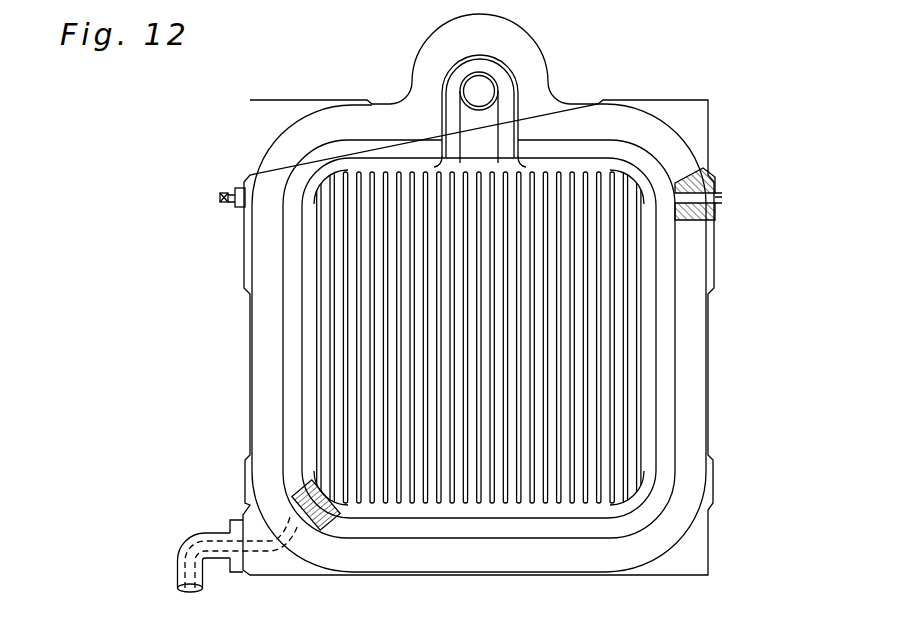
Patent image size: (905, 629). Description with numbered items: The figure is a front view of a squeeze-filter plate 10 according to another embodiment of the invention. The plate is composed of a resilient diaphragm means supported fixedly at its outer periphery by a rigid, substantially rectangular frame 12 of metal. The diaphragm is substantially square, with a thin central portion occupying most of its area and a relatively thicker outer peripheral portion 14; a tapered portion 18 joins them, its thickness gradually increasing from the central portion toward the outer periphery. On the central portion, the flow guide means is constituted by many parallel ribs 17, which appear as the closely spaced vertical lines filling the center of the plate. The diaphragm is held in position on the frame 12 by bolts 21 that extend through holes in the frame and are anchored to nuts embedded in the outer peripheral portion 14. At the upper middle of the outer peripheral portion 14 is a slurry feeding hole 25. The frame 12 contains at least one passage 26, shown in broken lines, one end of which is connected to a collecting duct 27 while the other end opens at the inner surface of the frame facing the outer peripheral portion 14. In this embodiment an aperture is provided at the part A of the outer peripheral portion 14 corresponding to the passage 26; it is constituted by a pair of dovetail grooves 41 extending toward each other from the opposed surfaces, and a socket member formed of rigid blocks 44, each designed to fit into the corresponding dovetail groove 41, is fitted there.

The squeeze-filter plate 10 is at (616, 96).
The frame 12 is at (660, 130).
The outer peripheral portion 14 is at (290, 264).
The parallel ribs 17 is at (550, 457).
The tapered portion 18 is at (312, 335).
The bolt 21 is at (223, 193).
The slurry feeding hole 25 is at (484, 88).
The passage 26 is at (273, 550).
The collecting duct 27 is at (172, 568).
The dovetail groove 41 is at (295, 493).
The rigid block 44 is at (341, 517).
The part A is at (302, 530).